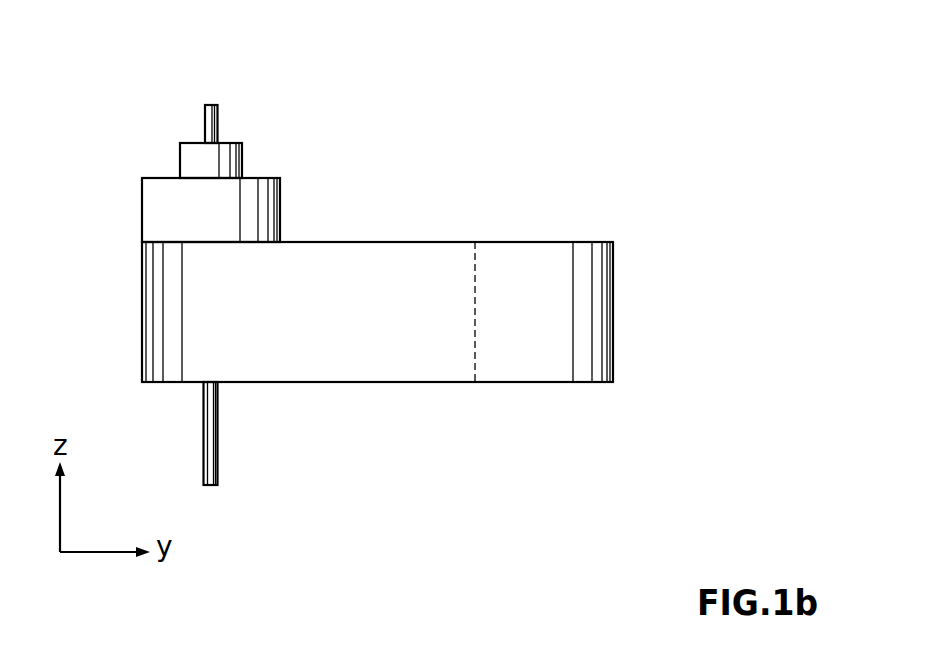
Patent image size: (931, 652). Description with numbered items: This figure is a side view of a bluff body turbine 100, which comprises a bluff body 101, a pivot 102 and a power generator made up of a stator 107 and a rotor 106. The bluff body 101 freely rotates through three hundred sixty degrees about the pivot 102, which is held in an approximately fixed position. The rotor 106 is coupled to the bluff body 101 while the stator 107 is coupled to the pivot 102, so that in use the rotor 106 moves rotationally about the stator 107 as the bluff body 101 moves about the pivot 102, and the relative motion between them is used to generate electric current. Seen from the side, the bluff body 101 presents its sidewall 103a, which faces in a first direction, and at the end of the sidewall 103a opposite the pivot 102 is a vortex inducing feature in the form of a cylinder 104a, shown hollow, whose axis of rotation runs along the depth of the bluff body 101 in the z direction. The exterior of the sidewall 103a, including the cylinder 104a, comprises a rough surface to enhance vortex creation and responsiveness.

The bluff body turbine 100 is at (177, 46).
The bluff body 101 is at (328, 267).
The pivot 102 is at (210, 122).
The sidewall 103a is at (347, 353).
The cylinder 104a is at (605, 297).
The rotor 106 is at (155, 207).
The stator 107 is at (187, 158).